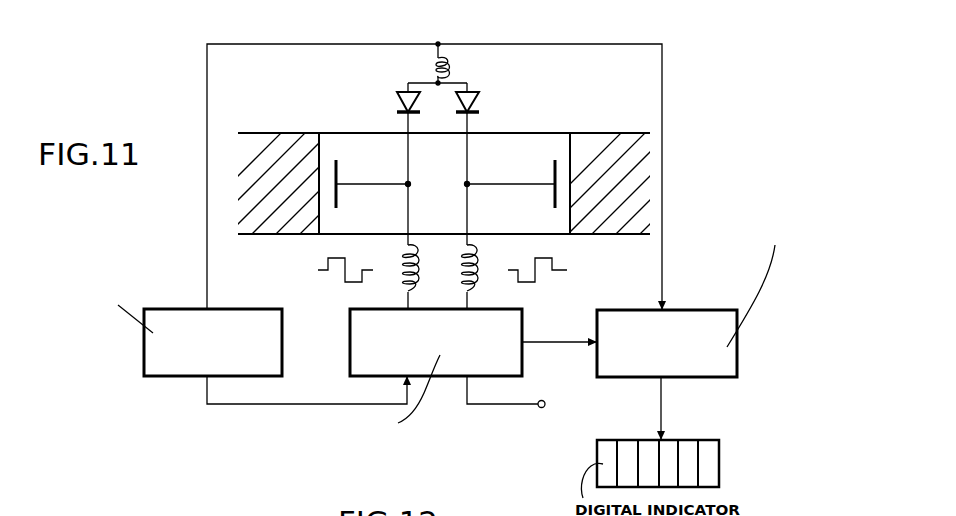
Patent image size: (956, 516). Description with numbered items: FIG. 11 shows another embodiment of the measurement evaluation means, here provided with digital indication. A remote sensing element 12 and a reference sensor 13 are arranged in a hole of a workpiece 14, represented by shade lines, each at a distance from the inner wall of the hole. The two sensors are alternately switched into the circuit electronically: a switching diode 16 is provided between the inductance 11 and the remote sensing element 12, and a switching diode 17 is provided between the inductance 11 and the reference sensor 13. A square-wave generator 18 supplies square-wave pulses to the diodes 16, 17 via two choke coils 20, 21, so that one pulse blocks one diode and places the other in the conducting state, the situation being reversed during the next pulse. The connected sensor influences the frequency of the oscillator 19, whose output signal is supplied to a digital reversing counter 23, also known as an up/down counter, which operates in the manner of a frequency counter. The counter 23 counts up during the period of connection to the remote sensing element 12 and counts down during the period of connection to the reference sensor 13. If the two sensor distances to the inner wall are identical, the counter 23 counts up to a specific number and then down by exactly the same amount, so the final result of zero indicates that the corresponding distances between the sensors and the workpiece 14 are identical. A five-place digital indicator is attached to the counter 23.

The inductance 11 is at (446, 62).
The remote sensing element 12 is at (340, 200).
The reference sensor 13 is at (553, 200).
The workpiece 14 is at (304, 223).
The switching diode 16 is at (397, 100).
The switching diode 17 is at (472, 100).
The square-wave generator 18 is at (446, 365).
The oscillator 19 is at (204, 348).
The choke coil 20 is at (400, 282).
The choke coil 21 is at (478, 278).
The digital reversing counter 23 is at (665, 317).